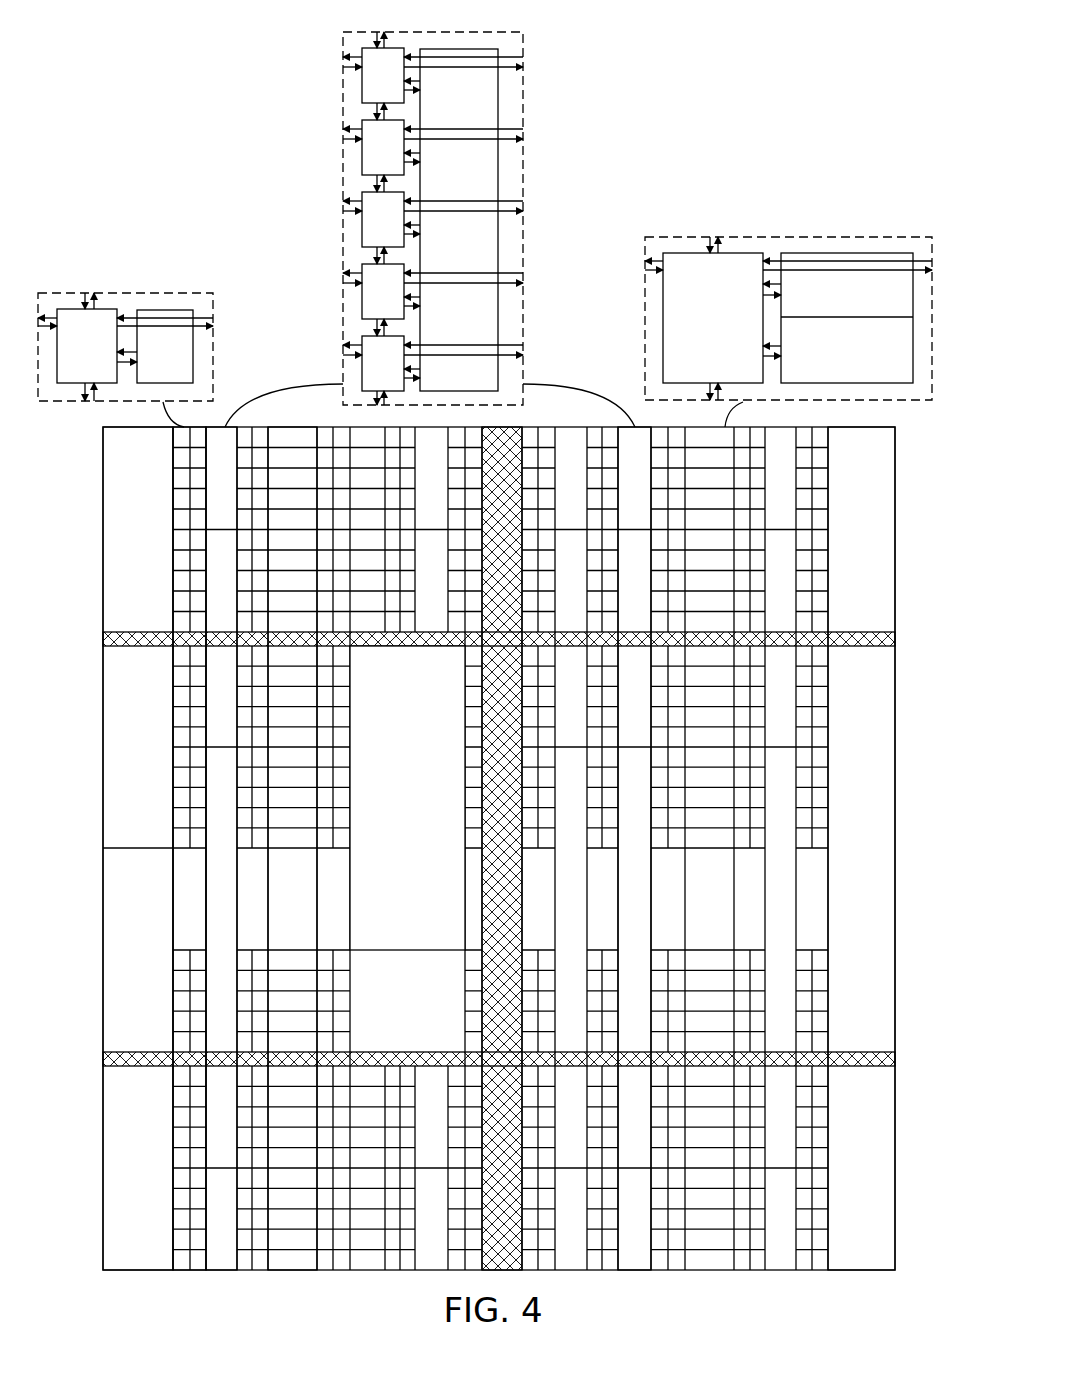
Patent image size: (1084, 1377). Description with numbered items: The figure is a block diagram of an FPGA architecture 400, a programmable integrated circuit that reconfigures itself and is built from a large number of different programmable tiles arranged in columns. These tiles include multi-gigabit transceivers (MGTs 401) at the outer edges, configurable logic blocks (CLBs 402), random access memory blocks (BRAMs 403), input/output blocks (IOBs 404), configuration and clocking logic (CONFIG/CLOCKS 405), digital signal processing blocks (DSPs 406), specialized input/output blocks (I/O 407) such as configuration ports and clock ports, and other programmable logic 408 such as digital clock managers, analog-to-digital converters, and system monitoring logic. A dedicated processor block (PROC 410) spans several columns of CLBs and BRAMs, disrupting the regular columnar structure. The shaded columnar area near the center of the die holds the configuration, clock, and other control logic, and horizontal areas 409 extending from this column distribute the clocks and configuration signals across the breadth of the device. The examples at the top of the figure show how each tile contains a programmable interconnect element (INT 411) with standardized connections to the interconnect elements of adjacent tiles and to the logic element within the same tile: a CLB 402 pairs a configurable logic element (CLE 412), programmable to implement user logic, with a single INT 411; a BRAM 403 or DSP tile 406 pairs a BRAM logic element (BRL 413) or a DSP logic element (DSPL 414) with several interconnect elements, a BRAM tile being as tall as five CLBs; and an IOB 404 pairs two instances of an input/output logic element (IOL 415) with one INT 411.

The FPGA architecture 400 is at (836, 90).
The multi-gigabit transceivers 401 is at (499, 848).
The configurable logic blocks 402 is at (430, 763).
The random access memory blocks 403 is at (495, 651).
The input/output blocks 404 is at (600, 736).
The configuration and clocking logic 405 is at (502, 848).
The digital signal processing blocks 406 is at (634, 848).
The specialized input/output blocks 407 is at (503, 844).
The other programmable logic 408 is at (503, 850).
The horizontal areas 409 is at (70, 652).
The processor block 410 is at (407, 798).
The programmable interconnect element 411 is at (713, 318).
The configurable logic element 412 is at (165, 346).
The BRAM logic element 413 is at (459, 220).
The DSP logic element 414 is at (459, 215).
The input/output logic element 415 is at (847, 318).